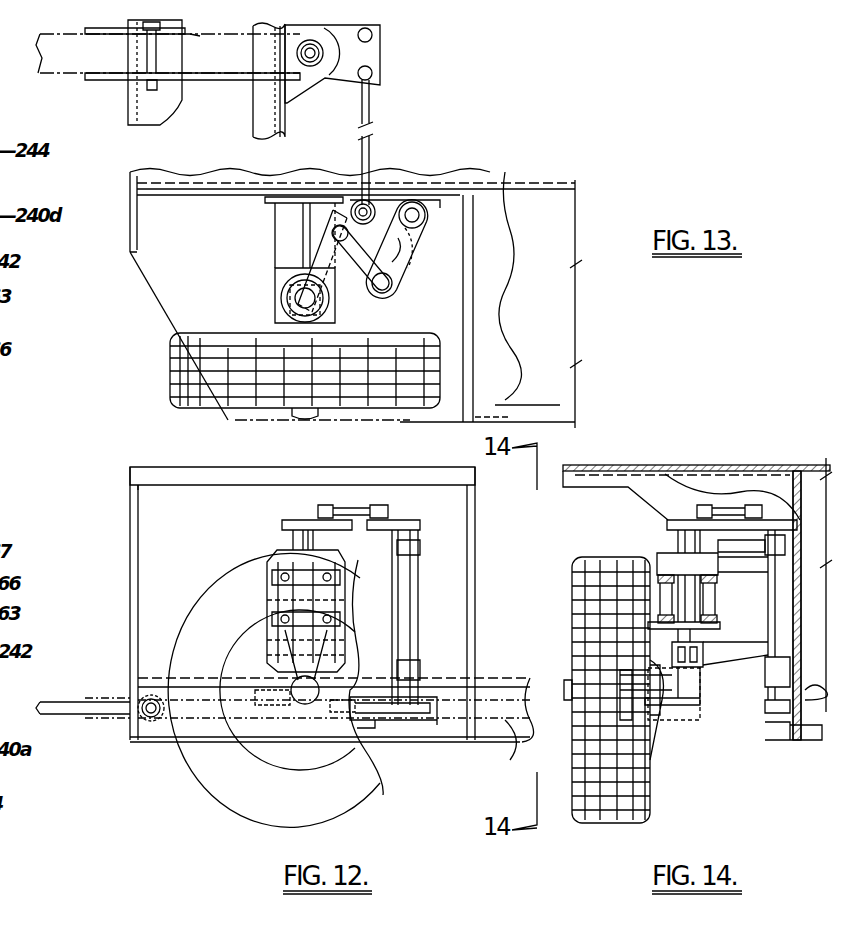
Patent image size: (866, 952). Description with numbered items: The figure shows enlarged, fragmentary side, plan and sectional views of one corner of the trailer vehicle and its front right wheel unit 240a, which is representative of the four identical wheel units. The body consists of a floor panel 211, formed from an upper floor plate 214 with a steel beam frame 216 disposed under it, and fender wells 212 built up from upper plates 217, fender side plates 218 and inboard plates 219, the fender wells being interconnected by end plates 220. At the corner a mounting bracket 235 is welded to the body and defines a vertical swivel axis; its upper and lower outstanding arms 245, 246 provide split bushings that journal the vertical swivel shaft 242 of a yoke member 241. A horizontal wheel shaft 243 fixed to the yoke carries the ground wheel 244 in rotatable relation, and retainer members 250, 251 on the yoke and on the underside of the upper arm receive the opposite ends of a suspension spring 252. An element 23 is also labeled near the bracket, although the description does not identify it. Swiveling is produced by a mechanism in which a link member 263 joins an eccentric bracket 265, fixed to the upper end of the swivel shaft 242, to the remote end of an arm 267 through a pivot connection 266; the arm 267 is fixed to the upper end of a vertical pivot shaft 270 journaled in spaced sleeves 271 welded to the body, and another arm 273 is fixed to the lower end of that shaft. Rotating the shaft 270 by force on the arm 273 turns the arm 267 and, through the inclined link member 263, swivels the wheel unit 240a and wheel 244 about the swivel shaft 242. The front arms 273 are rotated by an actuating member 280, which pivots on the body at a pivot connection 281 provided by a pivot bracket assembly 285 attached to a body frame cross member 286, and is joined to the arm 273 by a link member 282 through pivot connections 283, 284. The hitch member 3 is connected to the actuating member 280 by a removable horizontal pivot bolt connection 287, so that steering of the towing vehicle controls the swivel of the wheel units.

In FIG. 13, the hitch member 3 is at (75, 80).
In FIG. 12, the hitch member 3 is at (99, 700).
In FIG. 14, the rod 23 is at (745, 570).
In FIG. 14, the floor panel 211 is at (825, 680).
In FIG. 12, the fender wells 212 is at (196, 468).
In FIG. 12, the upper floor plate 214 is at (478, 683).
In FIG. 13, the steel beam frame 216 is at (497, 410).
In FIG. 12, the steel beam frame 216 is at (525, 720).
In FIG. 14, the upper plates 217 is at (638, 465).
In FIG. 12, the fender side plates 218 is at (467, 500).
In FIG. 13, the inboard plates 219 is at (455, 190).
In FIG. 12, the end plates 220 is at (133, 507).
In FIG. 13, the mounting bracket 235 is at (275, 215).
In FIG. 13, the wheel unit 240a is at (408, 414).
In FIG. 12, the wheel unit 240a is at (167, 617).
In FIG. 14, the wheel unit 240a is at (700, 685).
In FIG. 13, the yoke member 241 is at (280, 277).
In FIG. 12, the yoke member 241 is at (280, 625).
In FIG. 14, the yoke member 241 is at (658, 685).
In FIG. 13, the vertical swivel shaft 242 is at (300, 300).
In FIG. 12, the vertical swivel shaft 242 is at (300, 545).
In FIG. 14, the vertical swivel shaft 242 is at (665, 548).
In FIG. 13, the horizontal wheel shaft 243 is at (318, 414).
In FIG. 14, the horizontal wheel shaft 243 is at (643, 710).
In FIG. 13, the ground wheel 244 is at (185, 390).
In FIG. 14, the ground wheel 244 is at (593, 793).
In FIG. 14, the upper outstanding arm 245 is at (730, 560).
In FIG. 14, the lower outstanding arm 246 is at (745, 640).
In FIG. 14, the retainer member 250 is at (660, 578).
In FIG. 14, the retainer member 251 is at (650, 626).
In FIG. 14, the suspension spring 252 is at (668, 600).
In FIG. 13, the link member 263 is at (375, 292).
In FIG. 12, the link member 263 is at (375, 505).
In FIG. 13, the eccentric bracket 265 is at (322, 245).
In FIG. 12, the eccentric bracket 265 is at (310, 523).
In FIG. 14, the eccentric bracket 265 is at (680, 523).
In FIG. 13, the pivot connection 266 is at (390, 292).
In FIG. 13, the arm 267 is at (400, 240).
In FIG. 13, the vertical pivot shaft 270 is at (425, 215).
In FIG. 12, the vertical pivot shaft 270 is at (430, 565).
In FIG. 12, the sleeves 271 is at (400, 548).
In FIG. 13, the arm 273 is at (410, 262).
In FIG. 13, the actuating member 280 is at (372, 52).
In FIG. 12, the actuating member 280 is at (198, 710).
In FIG. 13, the pivot connection 281 is at (318, 66).
In FIG. 13, the link member 282 is at (375, 140).
In FIG. 13, the pivot connection 283 is at (372, 35).
In FIG. 13, the pivot connection 284 is at (366, 205).
In FIG. 13, the pivot bracket assembly 285 is at (285, 80).
In FIG. 13, the body frame cross member 286 is at (268, 115).
In FIG. 12, the body frame cross member 286 is at (278, 685).
In FIG. 13, the horizontal pivot bolt connection 287 is at (148, 50).
In FIG. 12, the horizontal pivot bolt connection 287 is at (150, 718).